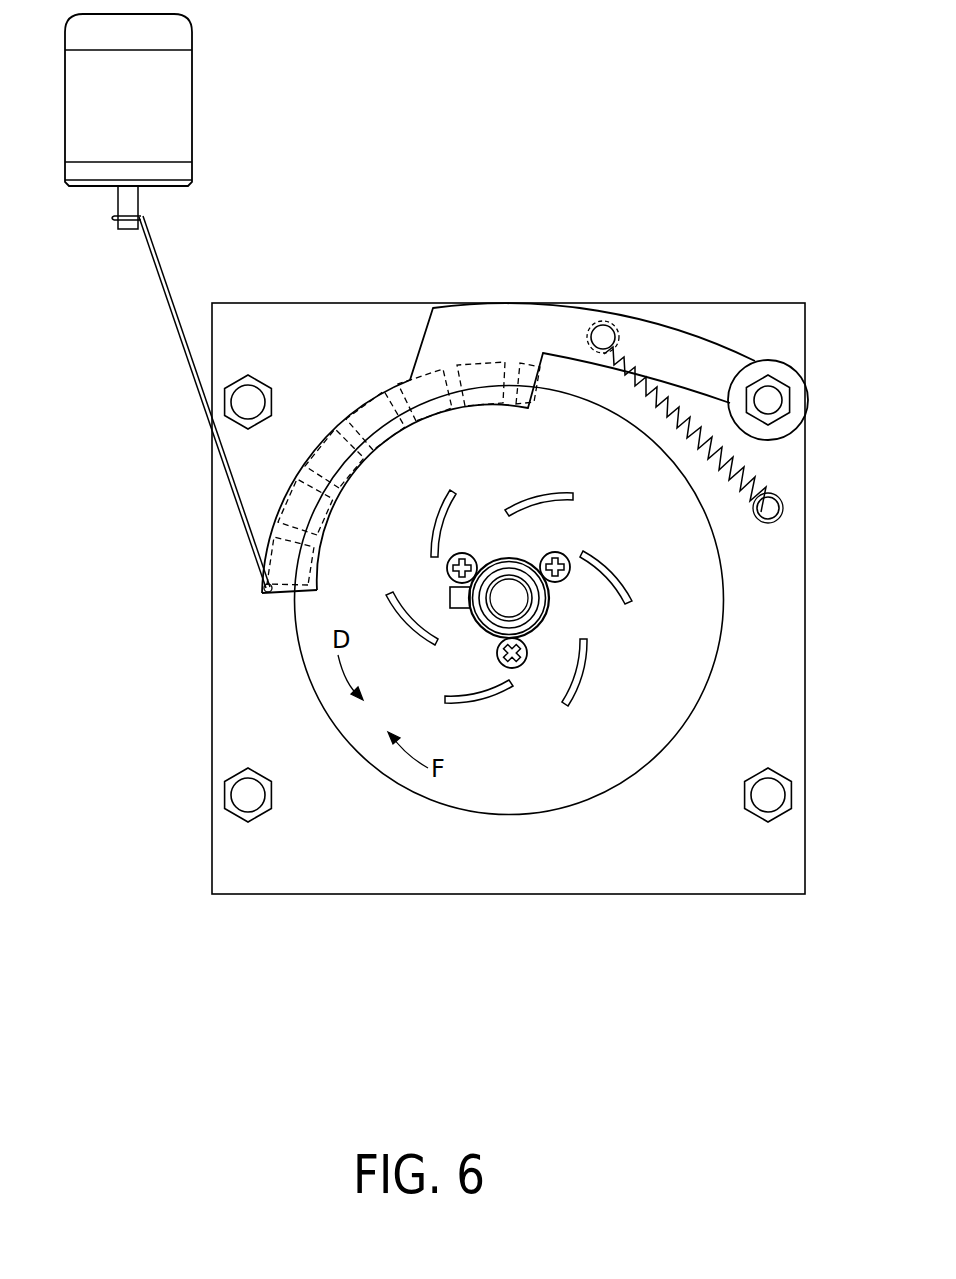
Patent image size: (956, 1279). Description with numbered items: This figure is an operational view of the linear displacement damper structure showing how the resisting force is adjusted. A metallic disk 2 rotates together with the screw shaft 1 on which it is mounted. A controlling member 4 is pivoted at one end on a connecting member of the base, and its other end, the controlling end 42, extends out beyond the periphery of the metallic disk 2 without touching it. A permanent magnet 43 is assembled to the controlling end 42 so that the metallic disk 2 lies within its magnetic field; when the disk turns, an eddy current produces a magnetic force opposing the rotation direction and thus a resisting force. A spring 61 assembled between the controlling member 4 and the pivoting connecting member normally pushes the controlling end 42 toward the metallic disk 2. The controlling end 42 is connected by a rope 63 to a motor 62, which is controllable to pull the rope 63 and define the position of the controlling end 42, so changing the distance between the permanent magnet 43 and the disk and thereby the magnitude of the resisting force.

The screw shaft 1 is at (520, 605).
The metallic disk 2 is at (515, 790).
The controlling member 4 is at (452, 320).
The controlling end 42 is at (403, 461).
The permanent magnet 43 is at (359, 390).
The spring 61 is at (757, 458).
The motor 62 is at (187, 113).
The rope 63 is at (165, 298).